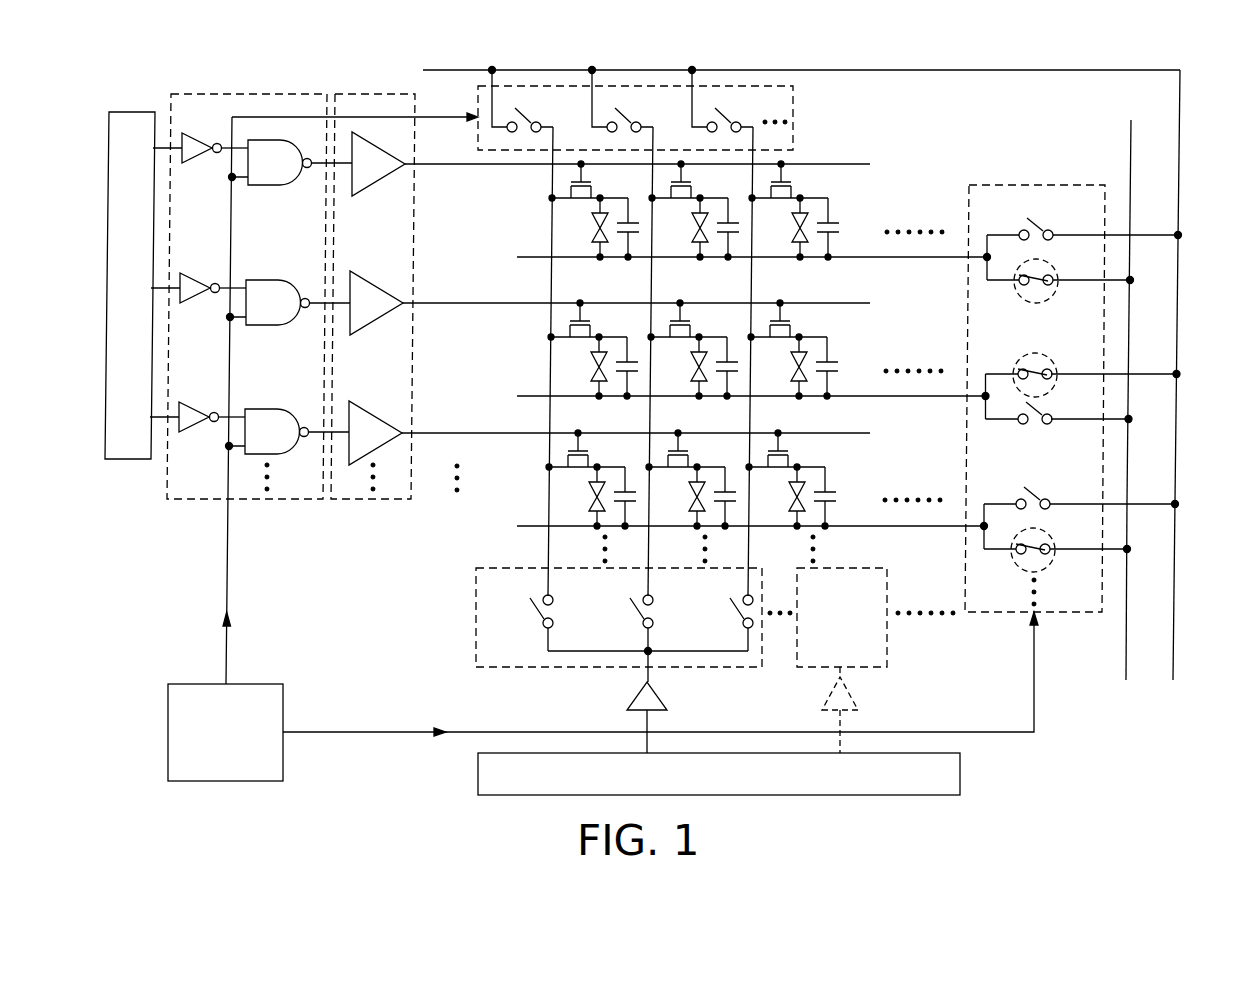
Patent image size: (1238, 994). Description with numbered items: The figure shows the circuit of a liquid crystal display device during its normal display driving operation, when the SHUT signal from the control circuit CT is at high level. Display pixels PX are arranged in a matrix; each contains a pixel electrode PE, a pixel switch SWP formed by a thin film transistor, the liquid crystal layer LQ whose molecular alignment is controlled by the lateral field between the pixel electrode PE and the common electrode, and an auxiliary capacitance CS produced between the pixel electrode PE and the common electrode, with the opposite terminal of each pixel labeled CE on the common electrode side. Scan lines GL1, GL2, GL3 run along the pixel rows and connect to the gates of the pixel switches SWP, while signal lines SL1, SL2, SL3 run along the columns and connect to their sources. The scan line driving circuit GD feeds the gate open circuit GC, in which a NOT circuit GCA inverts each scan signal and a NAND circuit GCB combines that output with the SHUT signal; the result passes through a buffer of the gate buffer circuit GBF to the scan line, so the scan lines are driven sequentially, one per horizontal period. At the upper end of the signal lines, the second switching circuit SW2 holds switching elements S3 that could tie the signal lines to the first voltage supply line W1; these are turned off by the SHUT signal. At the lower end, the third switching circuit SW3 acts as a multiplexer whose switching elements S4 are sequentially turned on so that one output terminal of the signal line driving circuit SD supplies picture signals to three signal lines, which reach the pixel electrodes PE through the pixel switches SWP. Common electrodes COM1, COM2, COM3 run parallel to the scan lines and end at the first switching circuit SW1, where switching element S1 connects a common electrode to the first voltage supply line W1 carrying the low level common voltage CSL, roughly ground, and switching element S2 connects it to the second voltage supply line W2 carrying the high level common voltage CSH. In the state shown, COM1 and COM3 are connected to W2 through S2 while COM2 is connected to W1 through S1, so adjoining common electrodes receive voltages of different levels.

The scan line driving circuit GD is at (127, 461).
The gate open circuit GC is at (213, 94).
The NOT circuit GCA is at (201, 161).
The NAND circuit GCB is at (270, 186).
The gate buffer circuit GBF is at (373, 94).
The switching element S3 is at (522, 104).
The second switching circuit SW2 is at (793, 112).
The scan line GL1 is at (500, 167).
The scan line GL2 is at (500, 306).
The scan line GL3 is at (498, 436).
The pixel switch SWP is at (775, 182).
The display pixel PX is at (866, 186).
The pixel electrode PE is at (802, 216).
The liquid crystal layer LQ is at (793, 231).
The auxiliary capacitance CS is at (840, 232).
The counter electrode CE is at (806, 245).
The first switching circuit SW1 is at (998, 185).
The switching element S1 is at (1043, 222).
The switching element S2 is at (1043, 267).
The common electrode COM1 is at (930, 259).
The common electrode COM2 is at (930, 398).
The common electrode COM3 is at (928, 528).
The signal line SL1 is at (548, 545).
The signal line SL2 is at (649, 550).
The signal line SL3 is at (750, 562).
The switching element S4 is at (534, 612).
The third switching circuit SW3 is at (728, 668).
The control circuit CT is at (167, 728).
The signal line driving circuit SD is at (961, 772).
The high level common voltage CSH is at (1126, 416).
The low level common voltage CSL is at (1179, 391).
The first voltage supply line W1 is at (1174, 658).
The second voltage supply line W2 is at (1126, 658).